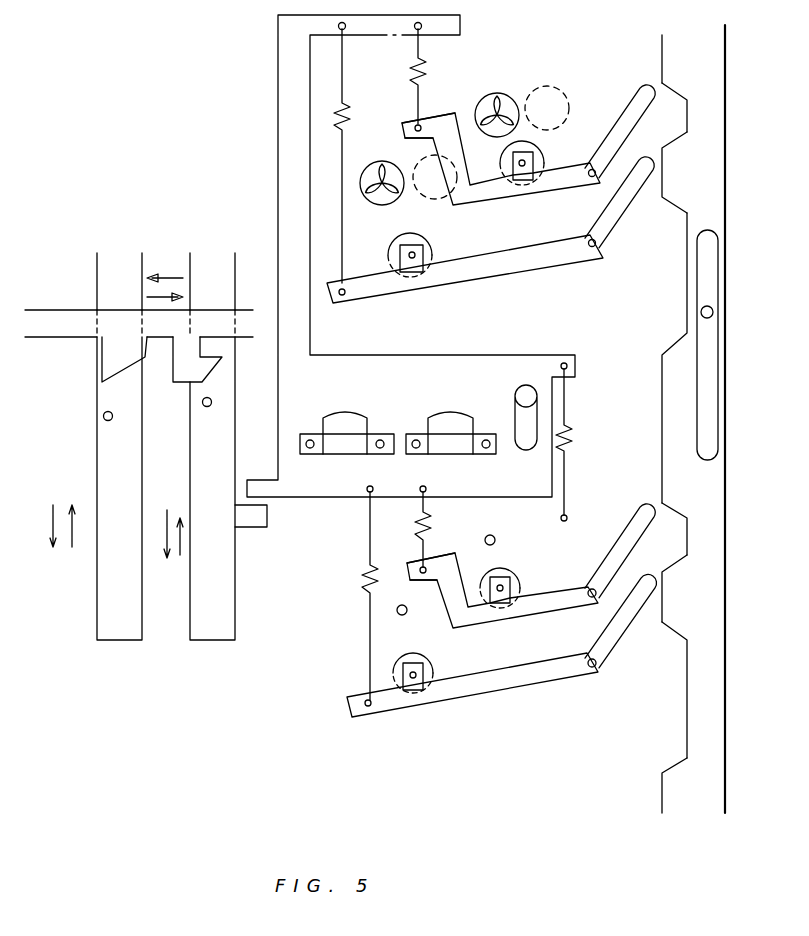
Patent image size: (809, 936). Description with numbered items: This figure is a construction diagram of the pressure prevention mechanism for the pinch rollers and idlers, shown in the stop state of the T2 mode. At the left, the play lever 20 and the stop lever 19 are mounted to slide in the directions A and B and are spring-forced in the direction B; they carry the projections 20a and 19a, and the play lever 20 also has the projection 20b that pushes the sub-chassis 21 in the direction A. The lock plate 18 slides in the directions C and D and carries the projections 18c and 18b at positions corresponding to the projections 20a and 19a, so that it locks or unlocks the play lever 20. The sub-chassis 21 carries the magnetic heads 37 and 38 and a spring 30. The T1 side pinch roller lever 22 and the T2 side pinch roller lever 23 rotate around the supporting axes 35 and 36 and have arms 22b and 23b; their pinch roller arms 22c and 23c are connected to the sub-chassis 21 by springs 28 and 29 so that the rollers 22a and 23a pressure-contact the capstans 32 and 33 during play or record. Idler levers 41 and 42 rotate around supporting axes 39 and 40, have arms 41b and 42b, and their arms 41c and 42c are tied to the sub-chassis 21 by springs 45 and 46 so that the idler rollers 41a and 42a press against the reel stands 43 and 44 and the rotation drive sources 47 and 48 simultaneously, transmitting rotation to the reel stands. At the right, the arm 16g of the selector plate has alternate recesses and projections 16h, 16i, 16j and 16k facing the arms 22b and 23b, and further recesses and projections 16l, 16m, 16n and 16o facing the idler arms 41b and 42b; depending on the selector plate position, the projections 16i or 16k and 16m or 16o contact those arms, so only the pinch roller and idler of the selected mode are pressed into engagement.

The arm of selector plate 16g is at (697, 800).
The recess of selector plate arm 16h is at (673, 710).
The projection of selector plate arm 16i is at (693, 608).
The recess of selector plate arm 16j is at (698, 535).
The projection of selector plate arm 16k is at (683, 473).
The recess of selector plate 16l is at (678, 270).
The projection of selector plate 16m is at (688, 187).
The recess of selector plate 16n is at (680, 118).
The projection of selector plate 16o is at (695, 62).
The lock plate 18 is at (58, 316).
The projection of lock plate 18b is at (100, 358).
The projection of lock plate 18c is at (193, 368).
The stop lever 19 is at (96, 590).
The projection of stop lever 19a is at (104, 420).
The play lever 20 is at (235, 620).
The projection of play lever 20a is at (204, 406).
The projection of play lever 20b is at (252, 518).
The sub-chassis 21 is at (512, 367).
The pinch roller lever 22 is at (512, 682).
The pinch roller 22a is at (440, 690).
The arm of pinch roller lever 22b is at (635, 633).
The pinch roller arm 22c is at (373, 712).
The pinch roller lever 23 is at (535, 607).
The pinch roller 23a is at (513, 578).
The arm of pinch roller lever 23b is at (635, 512).
The pinch roller arm 23c is at (437, 575).
The spring 28 is at (360, 595).
The spring 29 is at (432, 521).
The spring 30 is at (578, 436).
The capstan 32 is at (395, 615).
The capstan 33 is at (497, 535).
The supporting axis 35 is at (590, 672).
The supporting axis 36 is at (592, 585).
The magnetic head 37 is at (345, 420).
The magnetic head 38 is at (448, 420).
The supporting axis 39 is at (595, 250).
The supporting axis 40 is at (588, 183).
The idler lever 41 is at (500, 272).
The idler roller 41a is at (432, 280).
The arm of idler lever 41b is at (620, 210).
The arm of idler lever 41c is at (352, 300).
The idler lever 42 is at (528, 190).
The idler roller 42a is at (528, 152).
The arm of idler lever 42b is at (640, 95).
The arm of idler lever 42c is at (440, 118).
The reel stand 43 is at (378, 162).
The reel stand 44 is at (490, 94).
The spring 45 is at (356, 108).
The spring 46 is at (405, 65).
The rotation drive source 47 is at (440, 200).
The rotation drive source 48 is at (550, 86).